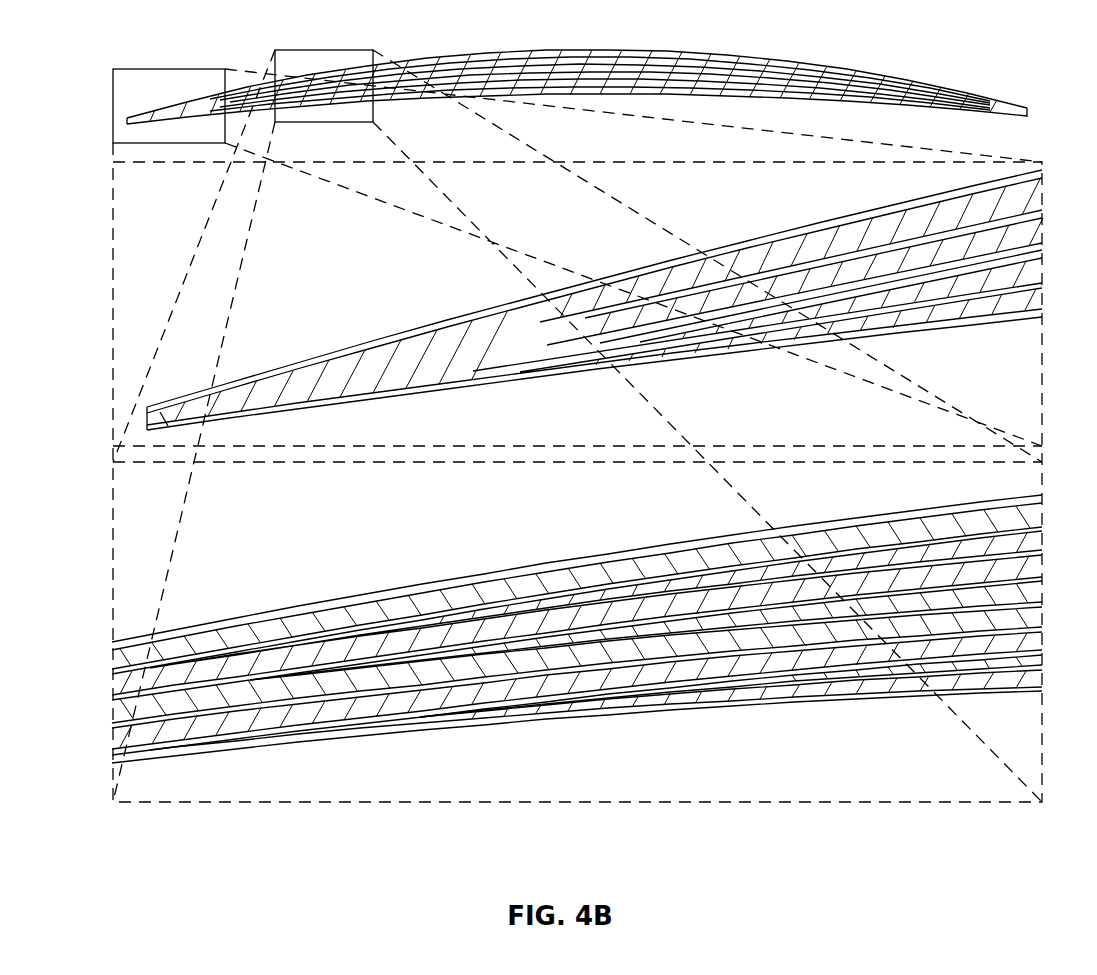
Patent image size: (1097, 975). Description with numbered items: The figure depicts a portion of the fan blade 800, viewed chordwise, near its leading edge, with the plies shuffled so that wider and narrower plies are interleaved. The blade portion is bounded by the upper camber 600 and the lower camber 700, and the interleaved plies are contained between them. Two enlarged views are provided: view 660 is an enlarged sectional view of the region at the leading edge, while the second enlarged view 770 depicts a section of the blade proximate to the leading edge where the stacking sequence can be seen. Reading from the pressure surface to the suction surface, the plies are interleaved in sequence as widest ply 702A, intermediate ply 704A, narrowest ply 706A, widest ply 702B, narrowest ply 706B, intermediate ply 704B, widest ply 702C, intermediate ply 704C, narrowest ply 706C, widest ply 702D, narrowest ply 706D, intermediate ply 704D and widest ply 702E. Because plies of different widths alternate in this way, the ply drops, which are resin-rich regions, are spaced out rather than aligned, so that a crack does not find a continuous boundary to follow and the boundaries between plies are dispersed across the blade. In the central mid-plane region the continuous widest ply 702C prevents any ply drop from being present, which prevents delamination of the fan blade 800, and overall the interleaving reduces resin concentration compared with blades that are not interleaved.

The upper camber 600 is at (695, 247).
The enlarged view 660 is at (181, 64).
The lower camber 700 is at (956, 327).
The widest ply 702A is at (913, 693).
The widest ply 702B is at (668, 662).
The widest ply 702C is at (577, 643).
The widest ply 702D is at (827, 580).
The widest ply 702E is at (255, 613).
The intermediate ply 704A is at (832, 683).
The intermediate ply 704B is at (613, 657).
The intermediate ply 704C is at (530, 627).
The intermediate ply 704D is at (533, 580).
The narrowest ply 706A is at (710, 667).
The narrowest ply 706B is at (660, 680).
The narrowest ply 706C is at (913, 577).
The narrowest ply 706D is at (690, 577).
The blade root region 770 is at (315, 48).
The fan blade 800 is at (381, 306).